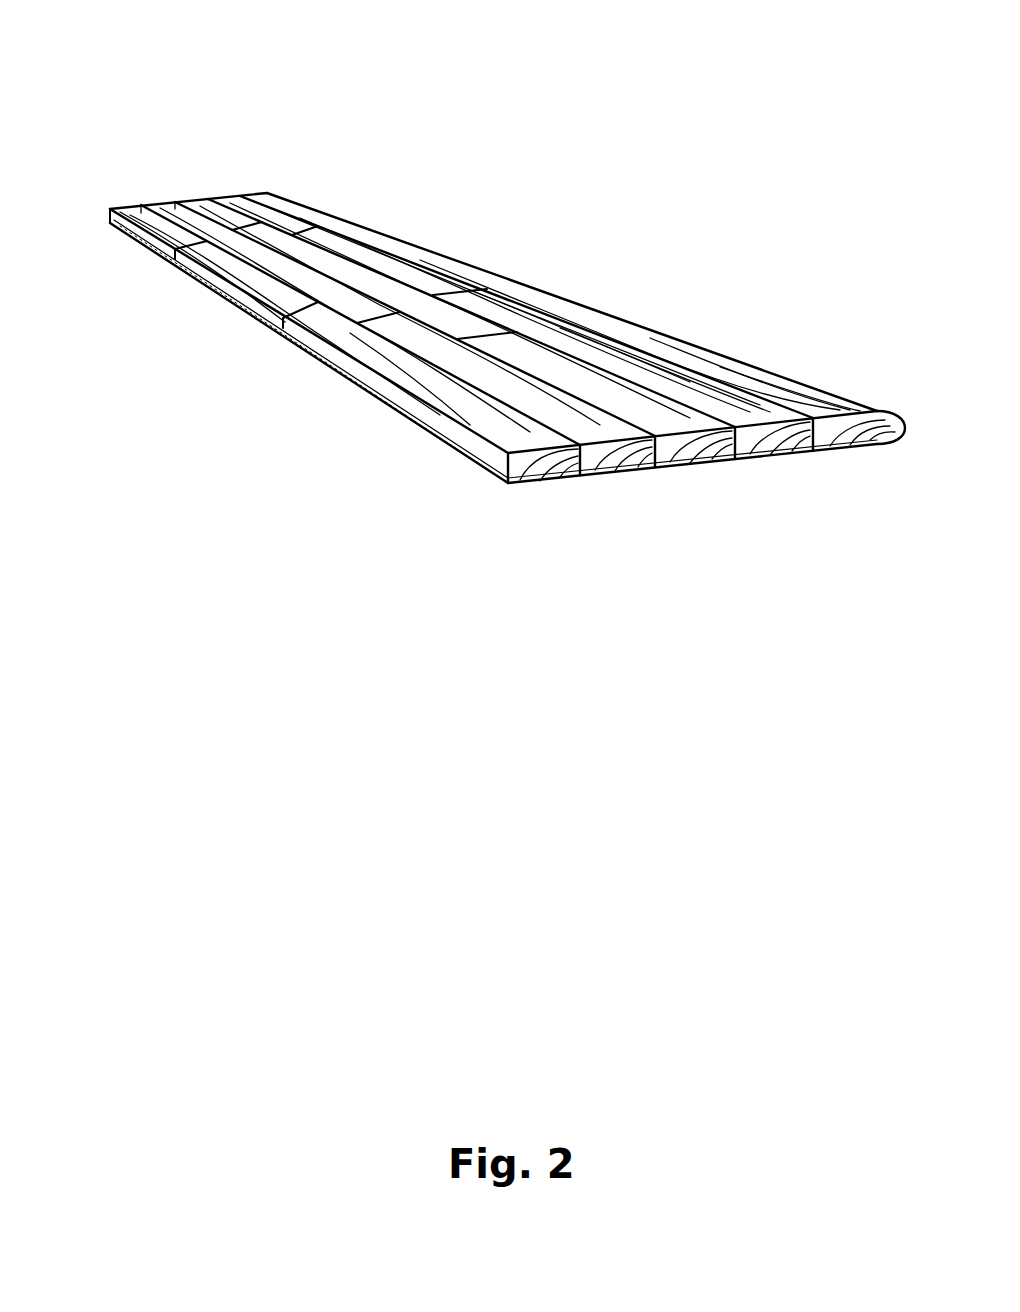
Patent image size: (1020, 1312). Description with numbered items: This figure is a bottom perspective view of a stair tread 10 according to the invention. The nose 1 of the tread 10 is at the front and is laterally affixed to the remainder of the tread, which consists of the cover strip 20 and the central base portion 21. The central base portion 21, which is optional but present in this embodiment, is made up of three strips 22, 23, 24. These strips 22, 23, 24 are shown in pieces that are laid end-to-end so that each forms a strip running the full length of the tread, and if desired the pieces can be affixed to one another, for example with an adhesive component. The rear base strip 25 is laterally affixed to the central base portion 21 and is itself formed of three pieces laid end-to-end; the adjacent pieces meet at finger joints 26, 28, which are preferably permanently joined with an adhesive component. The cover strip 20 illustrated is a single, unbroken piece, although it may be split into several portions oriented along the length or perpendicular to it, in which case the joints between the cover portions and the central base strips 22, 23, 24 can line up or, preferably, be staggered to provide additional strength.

The tread 10 is at (345, 200).
The nose 1 is at (442, 266).
The central base portion 21 is at (232, 192).
The strip 22 is at (720, 390).
The strip 23 is at (597, 388).
The strip 24 is at (600, 425).
The rear base strip 25 is at (425, 383).
The finger joint 26 is at (165, 262).
The finger joint 28 is at (278, 322).
The cover strip 20 is at (732, 462).